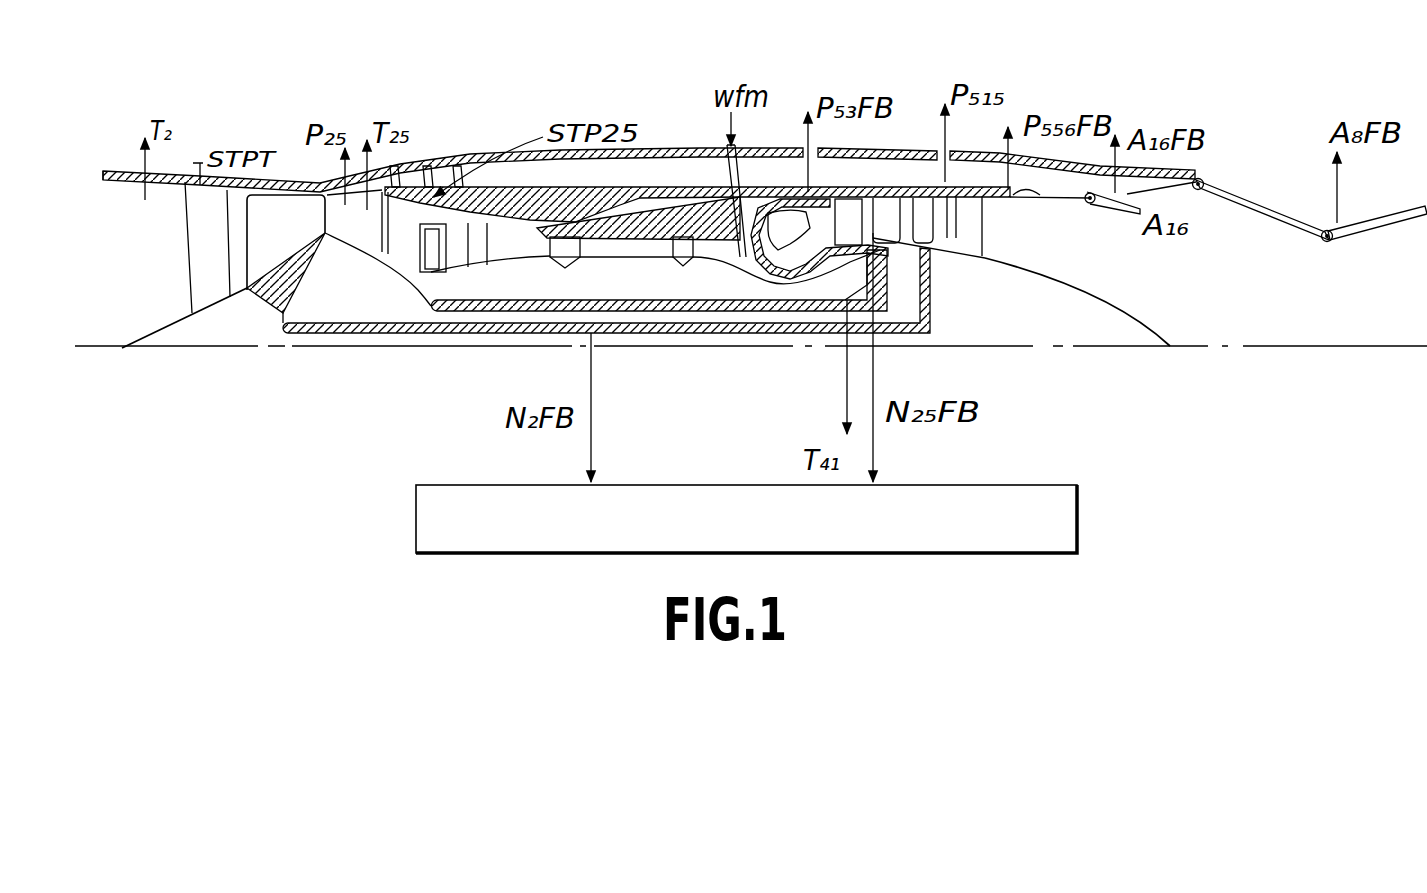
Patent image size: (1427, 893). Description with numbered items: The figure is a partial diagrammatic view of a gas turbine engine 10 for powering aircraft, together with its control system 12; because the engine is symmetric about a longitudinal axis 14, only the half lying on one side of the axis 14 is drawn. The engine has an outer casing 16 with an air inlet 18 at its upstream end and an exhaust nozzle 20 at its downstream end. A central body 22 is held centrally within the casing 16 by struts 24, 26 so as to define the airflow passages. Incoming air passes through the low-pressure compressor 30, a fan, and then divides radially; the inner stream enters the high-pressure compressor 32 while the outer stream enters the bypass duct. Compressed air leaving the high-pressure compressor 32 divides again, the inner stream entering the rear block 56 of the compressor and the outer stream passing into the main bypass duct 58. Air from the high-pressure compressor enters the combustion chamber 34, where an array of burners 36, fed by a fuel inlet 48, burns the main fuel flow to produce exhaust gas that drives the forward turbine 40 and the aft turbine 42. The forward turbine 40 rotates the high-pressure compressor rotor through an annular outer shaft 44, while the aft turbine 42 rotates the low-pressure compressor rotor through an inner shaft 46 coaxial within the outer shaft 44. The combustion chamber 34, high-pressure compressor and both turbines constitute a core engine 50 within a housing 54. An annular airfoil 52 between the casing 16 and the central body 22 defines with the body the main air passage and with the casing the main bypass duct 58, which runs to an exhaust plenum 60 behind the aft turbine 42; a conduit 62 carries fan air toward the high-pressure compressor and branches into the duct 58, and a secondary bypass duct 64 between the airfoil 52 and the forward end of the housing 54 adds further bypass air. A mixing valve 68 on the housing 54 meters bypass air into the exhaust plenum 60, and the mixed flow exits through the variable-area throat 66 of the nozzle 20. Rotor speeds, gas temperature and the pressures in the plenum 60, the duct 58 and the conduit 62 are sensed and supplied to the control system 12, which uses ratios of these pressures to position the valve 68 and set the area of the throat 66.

The gas turbine engine 10 is at (676, 138).
The control system 12 is at (1018, 484).
The longitudinal axis 14 is at (1300, 347).
The outer casing 16 is at (438, 195).
The air inlet 18 is at (112, 181).
The exhaust nozzle 20 is at (1268, 180).
The central body 22 is at (160, 328).
The strut 24 is at (186, 255).
The strut 26 is at (970, 230).
The low-pressure compressor 30 is at (283, 207).
The high-pressure compressor 32 is at (420, 250).
The combustion chamber 34 is at (822, 207).
The burners 36 is at (762, 205).
The forward turbine 40 is at (880, 200).
The aft turbine 42 is at (920, 200).
The outer shaft 44 is at (540, 298).
The inner shaft 46 is at (622, 336).
The fuel inlet 48 is at (744, 210).
The core engine 50 is at (817, 285).
The airfoil 52 is at (445, 193).
The housing 54 is at (400, 214).
The rear block 56 is at (603, 240).
The main bypass duct 58 is at (726, 150).
The exhaust plenum 60 is at (1113, 303).
The conduit 62 is at (363, 218).
The secondary bypass duct 64 is at (652, 147).
The throat 66 is at (1330, 243).
The mixing valve 68 is at (1114, 213).